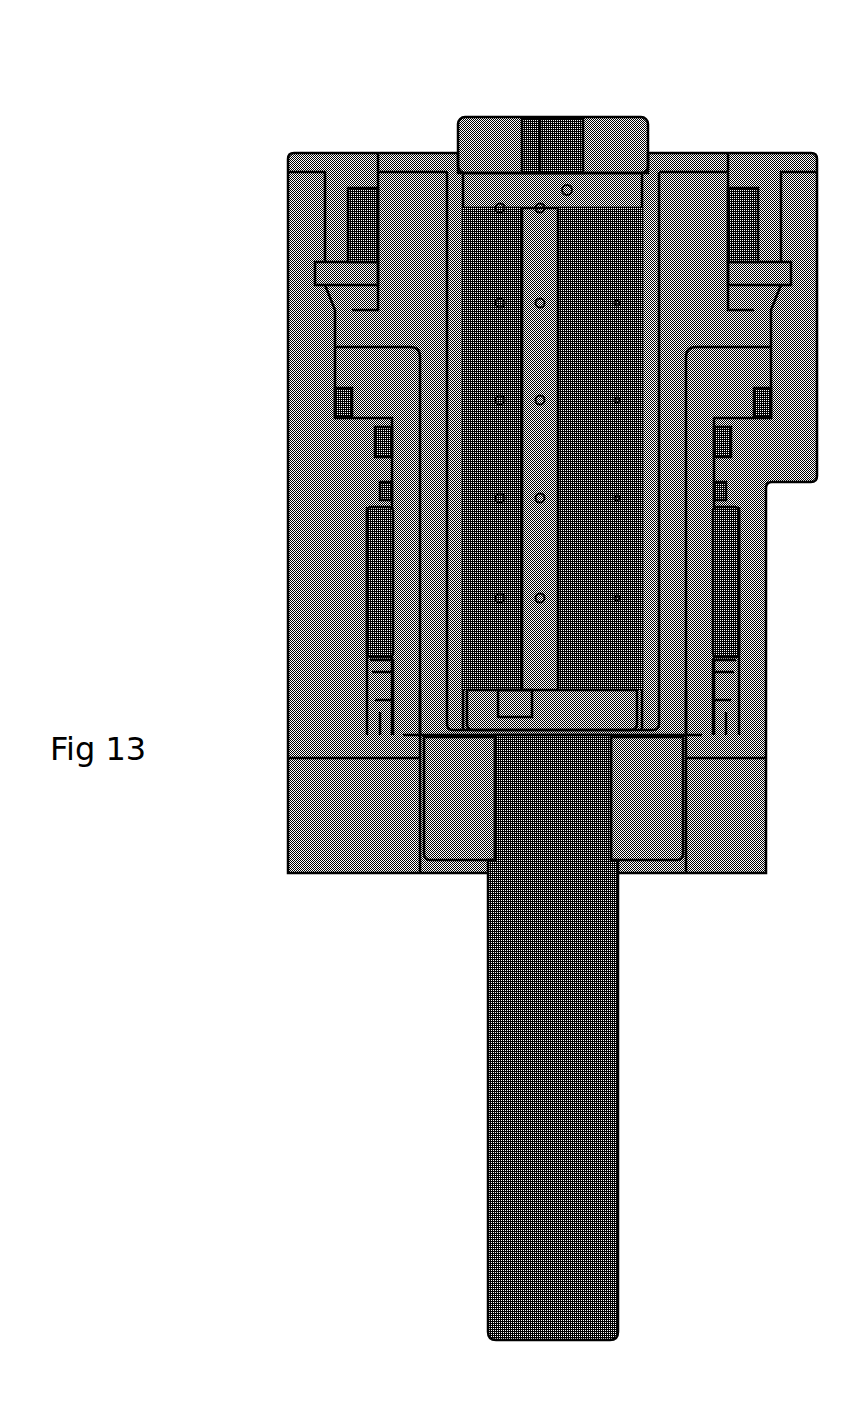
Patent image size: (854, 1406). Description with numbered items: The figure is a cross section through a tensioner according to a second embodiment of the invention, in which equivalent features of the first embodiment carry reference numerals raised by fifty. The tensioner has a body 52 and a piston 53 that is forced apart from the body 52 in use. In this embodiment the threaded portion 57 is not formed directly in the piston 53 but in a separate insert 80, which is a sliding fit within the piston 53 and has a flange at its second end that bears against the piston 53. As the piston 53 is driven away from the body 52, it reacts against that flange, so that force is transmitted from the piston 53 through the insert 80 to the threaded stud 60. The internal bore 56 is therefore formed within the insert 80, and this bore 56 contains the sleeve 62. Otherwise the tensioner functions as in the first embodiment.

The body 52 is at (318, 641).
The piston 53 is at (357, 362).
The internal bore 56 is at (650, 195).
The threaded portion 57 is at (447, 822).
The threaded stud 60 is at (527, 1088).
The sleeve 62 is at (648, 238).
The insert 80 is at (435, 568).